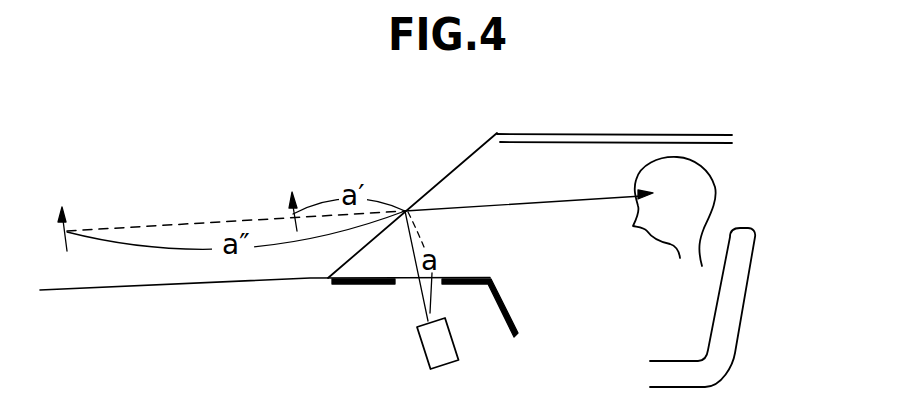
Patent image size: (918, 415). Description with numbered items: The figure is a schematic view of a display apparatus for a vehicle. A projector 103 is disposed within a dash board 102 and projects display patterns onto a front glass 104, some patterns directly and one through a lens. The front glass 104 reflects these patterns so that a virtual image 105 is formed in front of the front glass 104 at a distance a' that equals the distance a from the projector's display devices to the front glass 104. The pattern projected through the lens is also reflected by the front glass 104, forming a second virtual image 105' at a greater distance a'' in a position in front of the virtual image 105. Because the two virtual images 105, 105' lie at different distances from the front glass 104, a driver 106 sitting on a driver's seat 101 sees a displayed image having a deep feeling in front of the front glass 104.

The driver's seat 101 is at (730, 358).
The dash board 102 is at (492, 278).
The projector 103 is at (455, 348).
The front glass 104 is at (455, 170).
The virtual image 105 is at (299, 175).
The virtual image 105' is at (75, 199).
The driver 106 is at (717, 187).